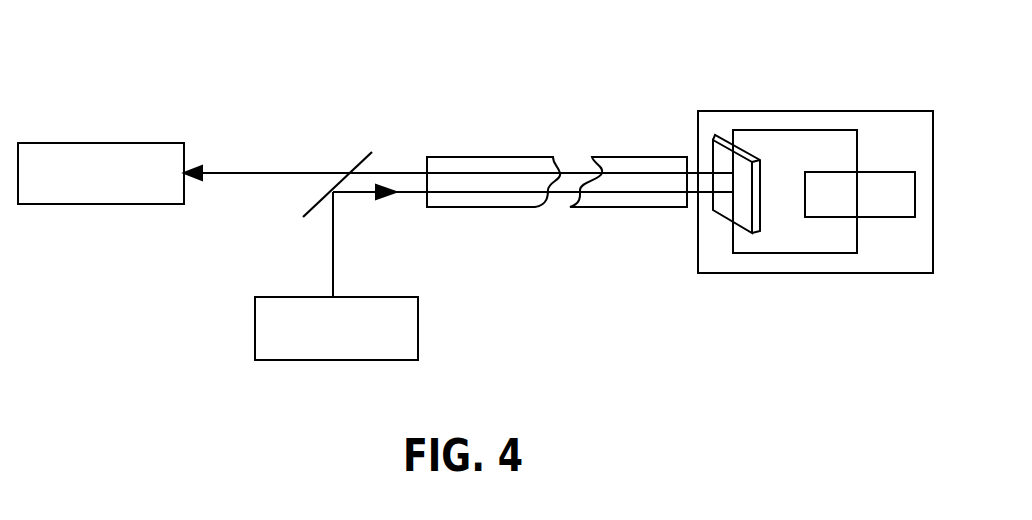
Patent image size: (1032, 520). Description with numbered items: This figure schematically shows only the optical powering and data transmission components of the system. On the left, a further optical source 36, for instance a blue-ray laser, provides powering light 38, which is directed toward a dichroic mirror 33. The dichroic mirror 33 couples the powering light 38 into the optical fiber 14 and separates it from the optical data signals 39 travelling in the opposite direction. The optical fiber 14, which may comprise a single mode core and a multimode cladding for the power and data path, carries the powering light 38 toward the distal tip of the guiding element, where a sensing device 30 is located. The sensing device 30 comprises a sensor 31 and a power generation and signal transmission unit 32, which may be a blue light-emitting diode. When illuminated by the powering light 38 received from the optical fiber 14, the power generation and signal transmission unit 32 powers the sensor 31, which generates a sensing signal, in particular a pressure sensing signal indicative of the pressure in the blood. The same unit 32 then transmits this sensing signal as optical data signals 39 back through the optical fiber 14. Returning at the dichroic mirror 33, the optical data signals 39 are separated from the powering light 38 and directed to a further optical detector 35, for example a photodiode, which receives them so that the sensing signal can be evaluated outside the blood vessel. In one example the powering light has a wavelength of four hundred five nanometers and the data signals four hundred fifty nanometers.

The optical fiber 14 is at (478, 150).
The sensing device 30 is at (880, 111).
The sensor 31 is at (897, 217).
The power generation and signal transmission unit 32 is at (720, 228).
The dichroic mirror 33 is at (344, 160).
The further optical detector 35 is at (107, 142).
The further optical source 36 is at (255, 308).
The powering light 38 is at (560, 205).
The optical data signals 39 is at (610, 157).